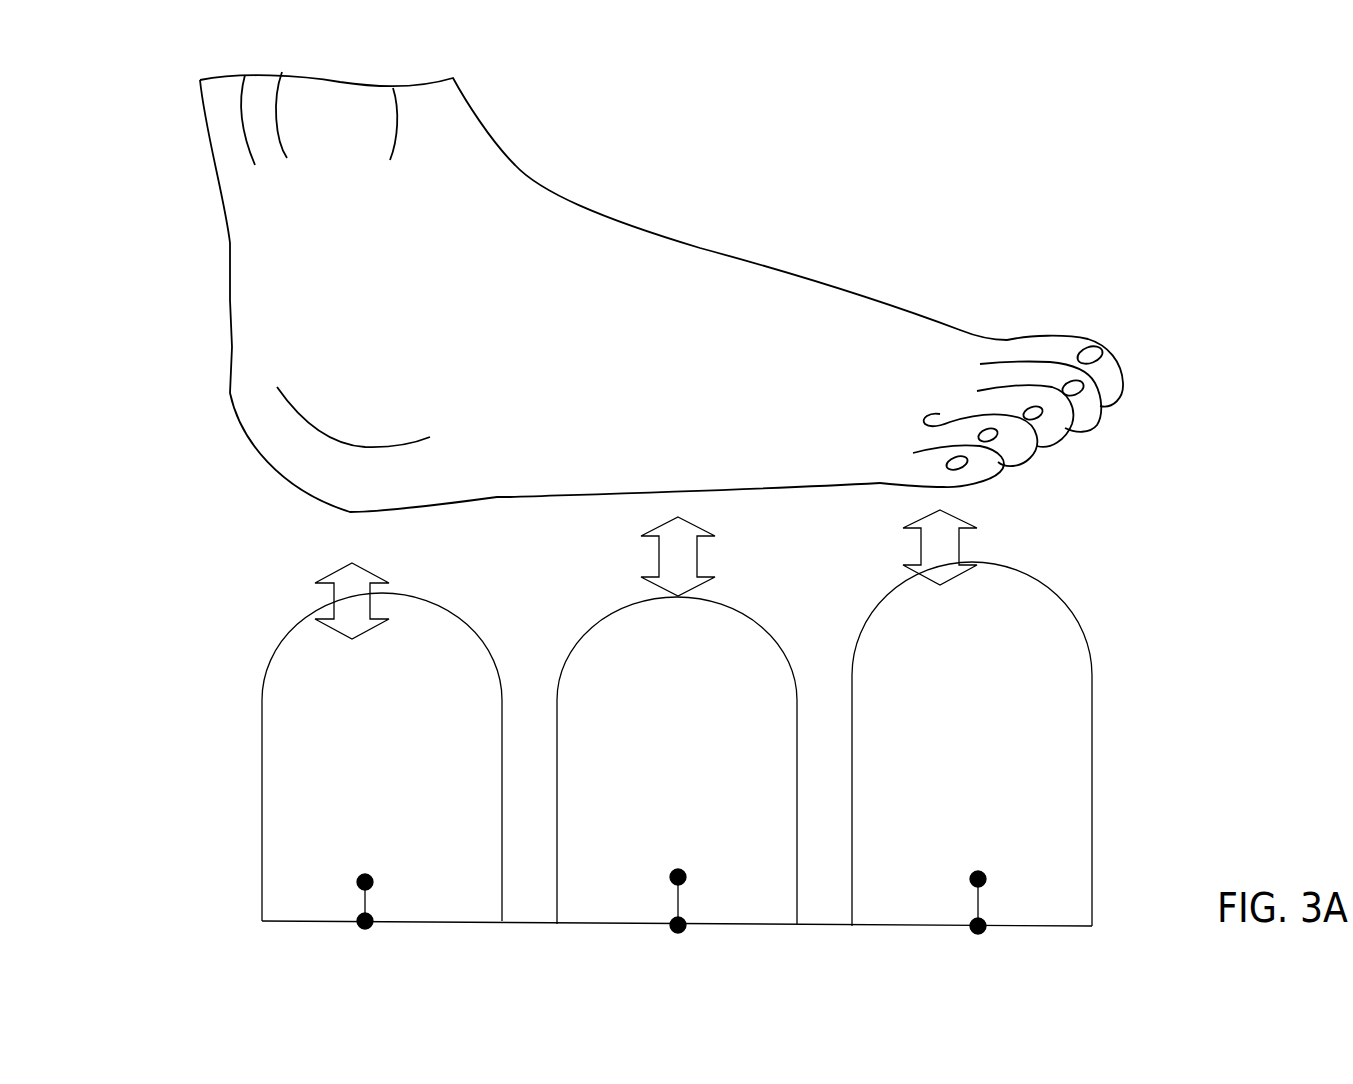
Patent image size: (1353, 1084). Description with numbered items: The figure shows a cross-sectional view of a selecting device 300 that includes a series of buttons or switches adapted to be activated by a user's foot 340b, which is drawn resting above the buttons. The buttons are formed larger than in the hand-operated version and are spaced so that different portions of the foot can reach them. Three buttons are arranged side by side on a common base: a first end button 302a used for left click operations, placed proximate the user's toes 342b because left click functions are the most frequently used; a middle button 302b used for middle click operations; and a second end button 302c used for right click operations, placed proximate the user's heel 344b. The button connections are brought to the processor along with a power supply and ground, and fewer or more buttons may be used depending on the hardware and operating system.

The selecting device 300 is at (187, 505).
The first end button 302a is at (1006, 687).
The middle button 302b is at (706, 685).
The second end button 302c is at (410, 682).
The foot 340b is at (380, 310).
The toes 342b is at (963, 412).
The heel 344b is at (282, 350).